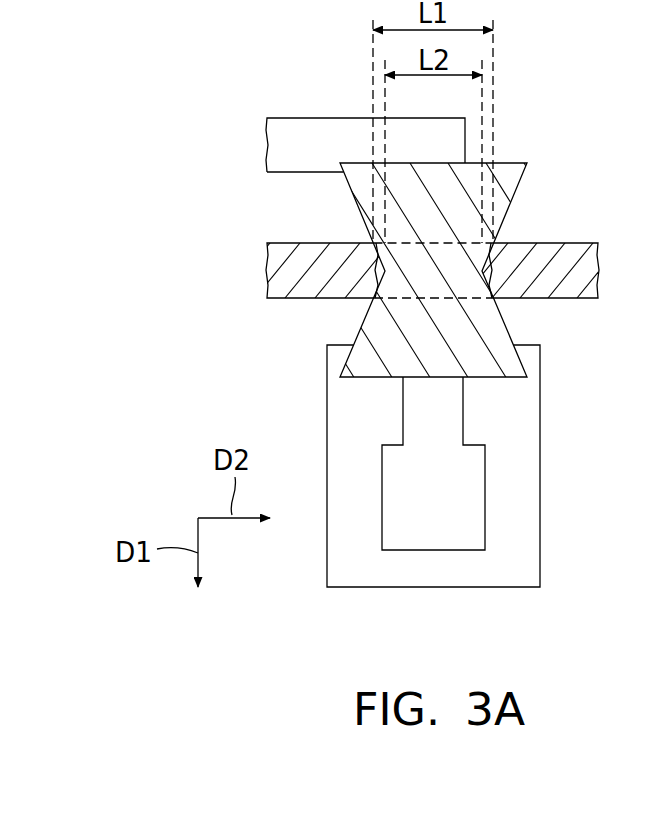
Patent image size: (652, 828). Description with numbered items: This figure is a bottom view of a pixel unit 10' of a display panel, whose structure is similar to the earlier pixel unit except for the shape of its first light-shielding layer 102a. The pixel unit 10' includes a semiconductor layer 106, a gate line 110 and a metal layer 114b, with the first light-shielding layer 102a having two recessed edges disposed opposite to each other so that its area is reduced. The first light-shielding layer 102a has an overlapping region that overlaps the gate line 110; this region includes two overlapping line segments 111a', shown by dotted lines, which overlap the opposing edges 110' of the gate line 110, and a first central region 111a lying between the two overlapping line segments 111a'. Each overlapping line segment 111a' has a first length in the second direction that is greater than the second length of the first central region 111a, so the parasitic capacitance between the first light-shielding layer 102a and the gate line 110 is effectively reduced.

The pixel unit 10' is at (176, 44).
The semiconductor layer 106 is at (297, 147).
The first light-shielding layer 102a is at (508, 172).
The gate line 110 is at (398, 270).
The opposing edges of the gate line 110' is at (331, 270).
The first central region 111a is at (301, 221).
The overlapping line segments 111a' is at (547, 266).
The metal layer 114b is at (518, 445).